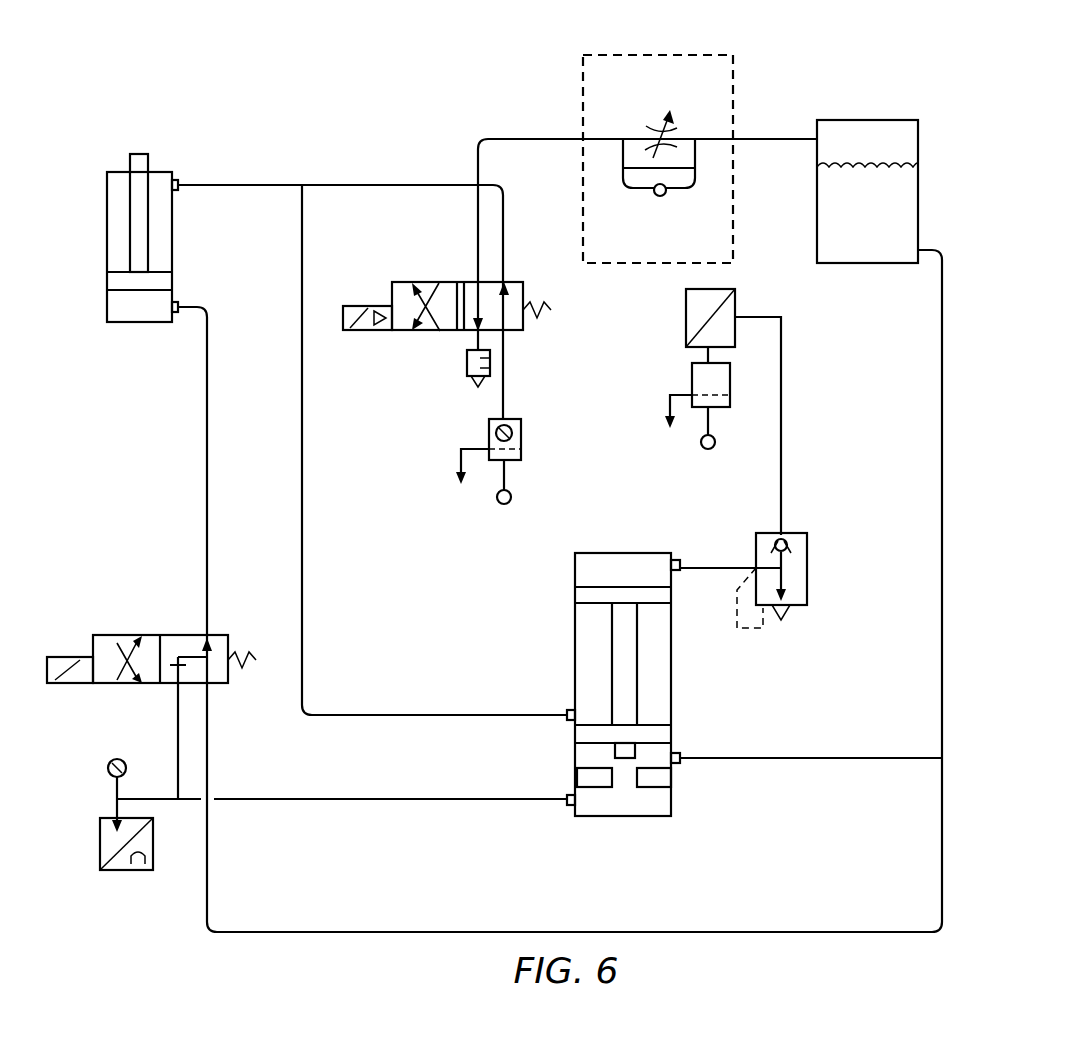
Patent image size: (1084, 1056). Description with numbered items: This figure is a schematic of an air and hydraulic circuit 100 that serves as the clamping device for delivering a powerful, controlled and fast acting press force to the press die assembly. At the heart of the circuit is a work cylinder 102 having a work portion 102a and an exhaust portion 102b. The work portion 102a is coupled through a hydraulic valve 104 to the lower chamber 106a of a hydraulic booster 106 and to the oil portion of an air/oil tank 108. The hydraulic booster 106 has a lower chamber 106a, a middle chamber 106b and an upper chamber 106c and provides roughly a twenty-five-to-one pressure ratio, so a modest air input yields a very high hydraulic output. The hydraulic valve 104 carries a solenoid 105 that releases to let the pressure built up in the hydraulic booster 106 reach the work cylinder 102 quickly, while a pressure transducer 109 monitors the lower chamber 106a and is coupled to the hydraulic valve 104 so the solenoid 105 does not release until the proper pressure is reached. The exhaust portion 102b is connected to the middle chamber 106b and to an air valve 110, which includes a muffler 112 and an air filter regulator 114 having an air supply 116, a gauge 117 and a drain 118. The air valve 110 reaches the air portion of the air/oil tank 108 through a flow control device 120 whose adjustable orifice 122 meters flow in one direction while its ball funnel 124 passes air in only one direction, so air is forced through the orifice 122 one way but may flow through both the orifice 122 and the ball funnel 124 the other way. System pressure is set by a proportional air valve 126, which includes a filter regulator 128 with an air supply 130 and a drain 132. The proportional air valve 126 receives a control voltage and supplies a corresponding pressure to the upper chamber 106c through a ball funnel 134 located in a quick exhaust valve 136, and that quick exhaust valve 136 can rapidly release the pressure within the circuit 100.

The air and hydraulic circuit 100 is at (360, 57).
The work cylinder 102 is at (107, 195).
The work portion 102a is at (148, 322).
The exhaust portion 102b is at (163, 222).
The hydraulic valve 104 is at (168, 635).
The solenoid 105 is at (73, 684).
The hydraulic booster 106 is at (673, 670).
The lower chamber 106a is at (623, 820).
The middle chamber 106b is at (583, 654).
The upper chamber 106c is at (622, 562).
The air/oil tank 108 is at (890, 120).
The pressure transducer 109 is at (126, 872).
The air valve 110 is at (428, 282).
The muffler 112 is at (467, 363).
The air filter regulator 114 is at (522, 445).
The air supply 116 is at (504, 505).
The gauge 117 is at (494, 432).
The drain 118 is at (460, 462).
The flow control device 120 is at (686, 55).
The adjustable orifice 122 is at (655, 128).
The ball funnel 124 is at (662, 198).
The proportional air valve 126 is at (686, 316).
The filter regulator 128 is at (692, 371).
The air supply 130 is at (708, 452).
The drain 132 is at (668, 400).
The ball funnel 134 is at (790, 532).
The quick exhaust valve 136 is at (807, 570).